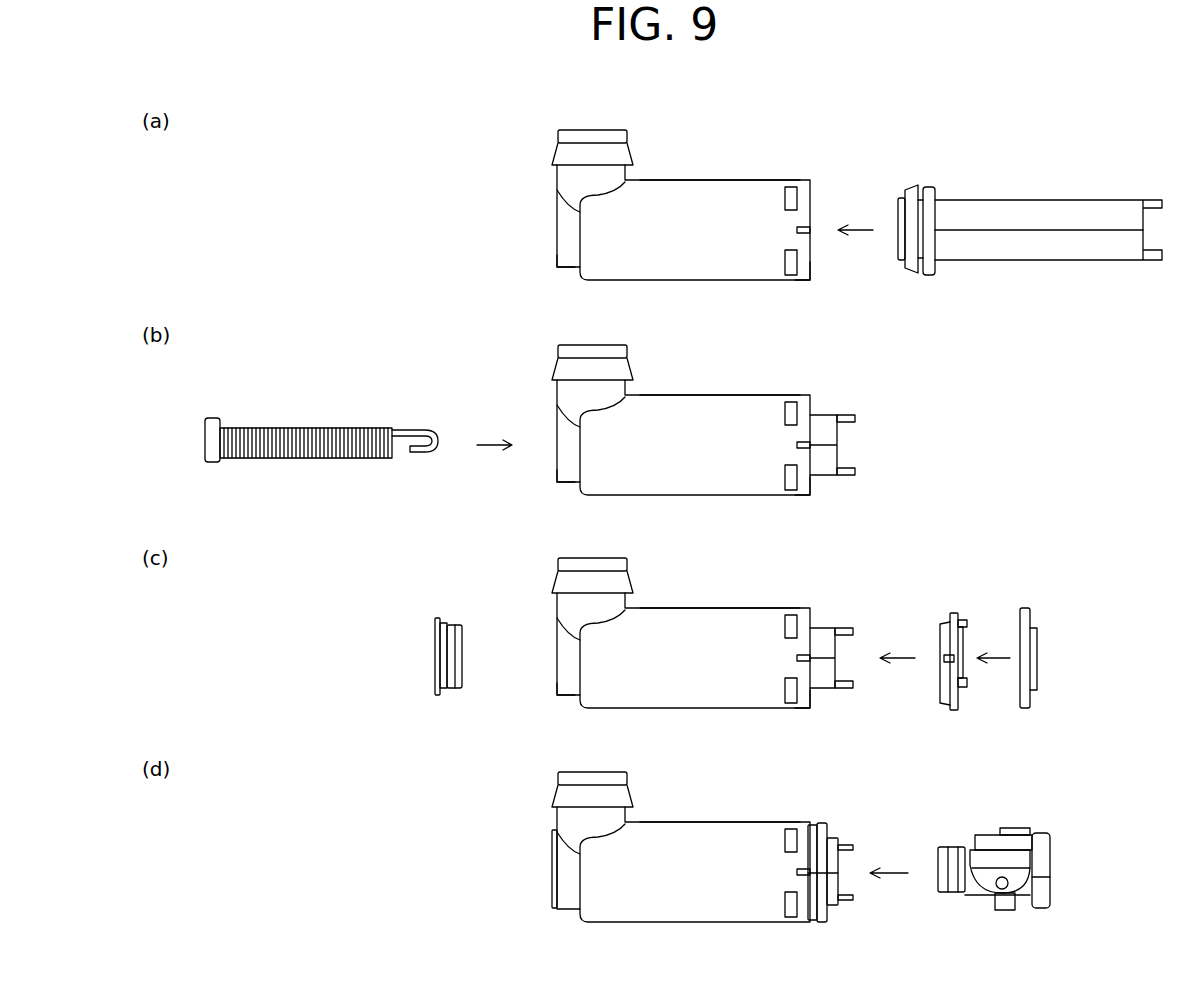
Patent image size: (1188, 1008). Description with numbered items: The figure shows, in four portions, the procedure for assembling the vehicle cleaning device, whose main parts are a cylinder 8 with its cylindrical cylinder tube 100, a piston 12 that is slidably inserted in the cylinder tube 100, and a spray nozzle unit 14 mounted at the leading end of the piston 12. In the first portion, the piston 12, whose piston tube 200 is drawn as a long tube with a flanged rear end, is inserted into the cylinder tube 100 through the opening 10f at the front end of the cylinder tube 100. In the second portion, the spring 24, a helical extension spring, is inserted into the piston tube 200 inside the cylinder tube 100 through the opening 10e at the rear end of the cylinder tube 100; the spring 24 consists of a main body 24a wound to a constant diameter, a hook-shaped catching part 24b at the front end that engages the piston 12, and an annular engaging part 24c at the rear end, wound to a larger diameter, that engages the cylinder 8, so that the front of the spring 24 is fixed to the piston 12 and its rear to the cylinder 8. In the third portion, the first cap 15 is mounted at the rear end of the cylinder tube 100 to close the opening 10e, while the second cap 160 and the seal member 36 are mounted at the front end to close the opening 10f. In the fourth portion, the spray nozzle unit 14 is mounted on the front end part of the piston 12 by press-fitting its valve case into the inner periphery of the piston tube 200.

The cylinder 8 is at (721, 168).
The cylinder tube 100 is at (750, 182).
The opening at the rear end of the cylinder tube 10e is at (552, 269).
The opening at the front end of the cylinder tube 10f is at (819, 280).
The piston 12 is at (1066, 194).
The piston tube 200 is at (1002, 200).
The spring 24 is at (317, 436).
The main body 24a is at (333, 461).
The catching part 24b is at (420, 432).
The annular engaging part 24c is at (212, 470).
The first cap 15 is at (496, 730).
The second cap 160 is at (887, 738).
The seal member 36 is at (932, 736).
The spray nozzle unit 14 is at (1010, 835).